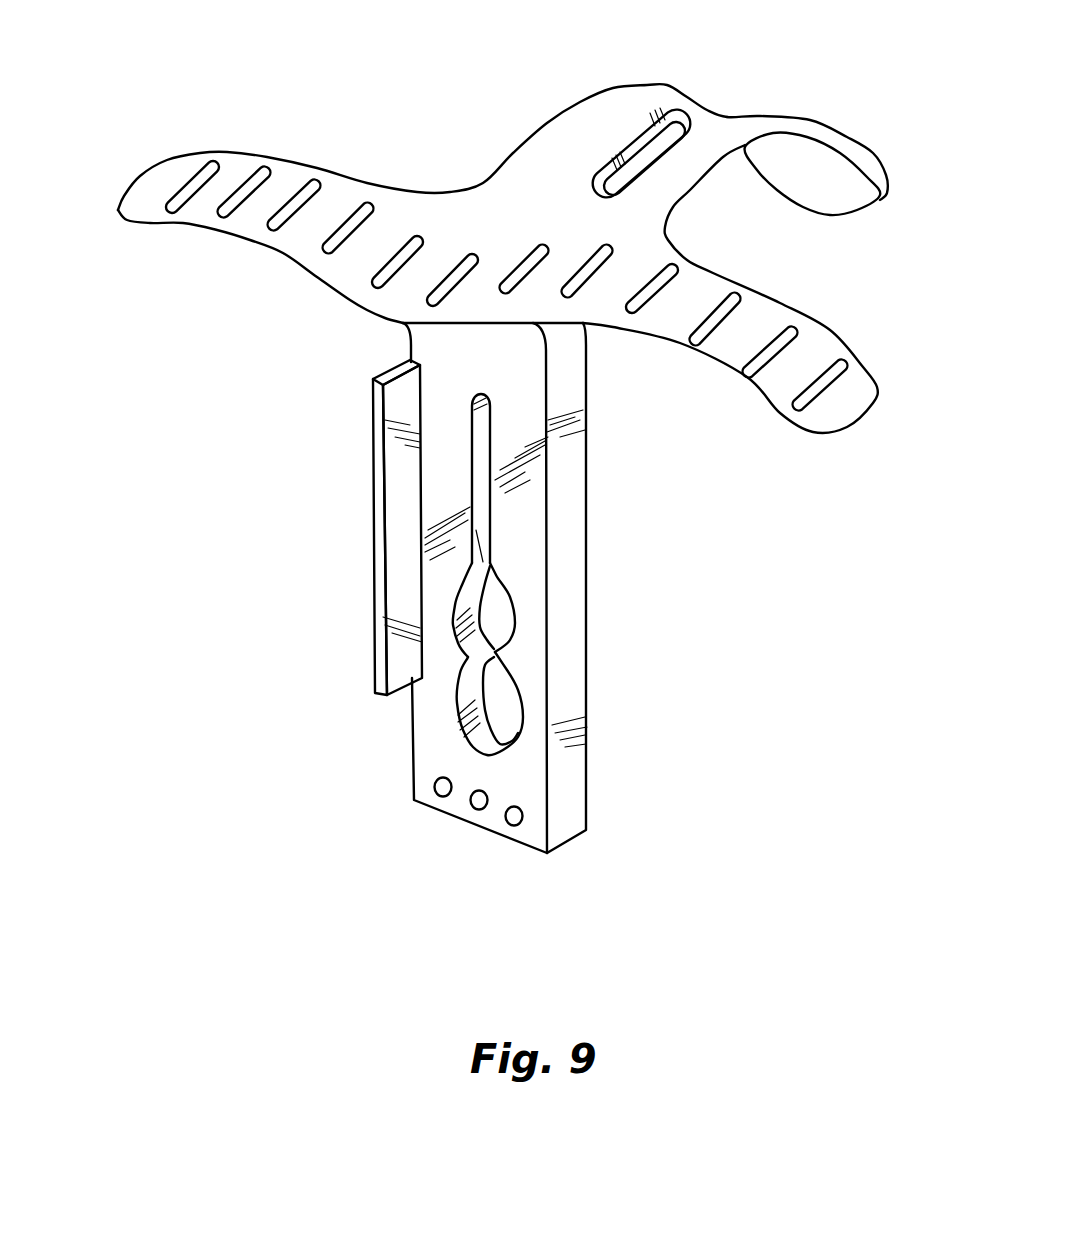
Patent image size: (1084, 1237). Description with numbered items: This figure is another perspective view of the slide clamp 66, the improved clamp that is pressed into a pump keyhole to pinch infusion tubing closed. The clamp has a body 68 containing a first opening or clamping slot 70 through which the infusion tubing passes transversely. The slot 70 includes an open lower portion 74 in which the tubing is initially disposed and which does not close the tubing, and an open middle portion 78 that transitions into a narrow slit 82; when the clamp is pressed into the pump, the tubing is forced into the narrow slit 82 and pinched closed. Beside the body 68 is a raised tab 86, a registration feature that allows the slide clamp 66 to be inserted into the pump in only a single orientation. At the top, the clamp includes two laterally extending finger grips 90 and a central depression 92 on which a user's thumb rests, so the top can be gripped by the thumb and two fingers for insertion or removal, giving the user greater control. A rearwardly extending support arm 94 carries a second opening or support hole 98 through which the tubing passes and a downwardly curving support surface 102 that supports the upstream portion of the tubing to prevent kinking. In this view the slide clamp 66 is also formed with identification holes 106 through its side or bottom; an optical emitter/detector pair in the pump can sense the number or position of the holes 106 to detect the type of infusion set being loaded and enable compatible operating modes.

The slide clamp 66 is at (575, 572).
The body 68 is at (528, 468).
The clamping slot 70 is at (497, 660).
The open lower portion 74 is at (503, 708).
The open middle portion 78 is at (498, 630).
The narrow slit 82 is at (493, 522).
The raised tab 86 is at (395, 575).
The finger grips 90 is at (250, 218).
The central depression 92 is at (413, 290).
The support arm 94 is at (590, 125).
The support hole 98 is at (650, 160).
The support surface 102 is at (737, 117).
The identification holes 106 is at (442, 797).